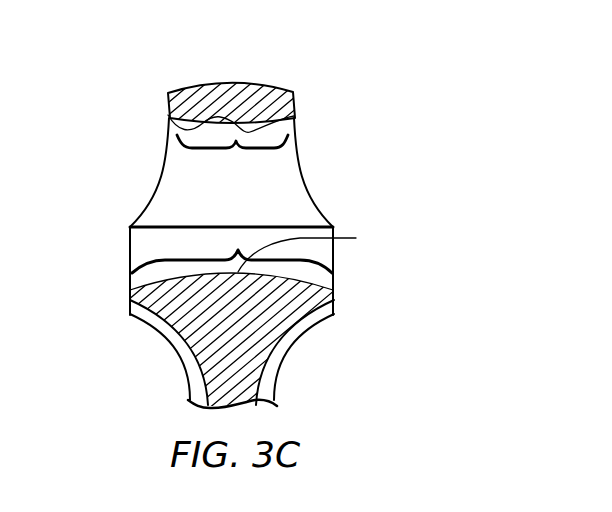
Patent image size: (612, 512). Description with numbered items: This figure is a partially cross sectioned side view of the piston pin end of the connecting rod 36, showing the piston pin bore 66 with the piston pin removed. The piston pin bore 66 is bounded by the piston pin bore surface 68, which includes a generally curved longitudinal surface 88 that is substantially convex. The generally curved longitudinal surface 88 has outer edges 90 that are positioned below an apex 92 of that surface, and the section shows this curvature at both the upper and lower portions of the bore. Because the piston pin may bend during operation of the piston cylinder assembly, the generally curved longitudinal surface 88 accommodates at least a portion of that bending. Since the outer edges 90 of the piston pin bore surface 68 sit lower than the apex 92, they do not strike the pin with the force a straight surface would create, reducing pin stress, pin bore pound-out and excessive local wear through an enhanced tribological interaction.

The connecting rod 36 is at (326, 72).
The piston pin bore 66 is at (295, 132).
The piston pin bore surface 68 is at (176, 122).
The generally curved longitudinal surface 88 is at (132, 168).
The outer edges 90 is at (168, 115).
The apex 92 is at (290, 127).